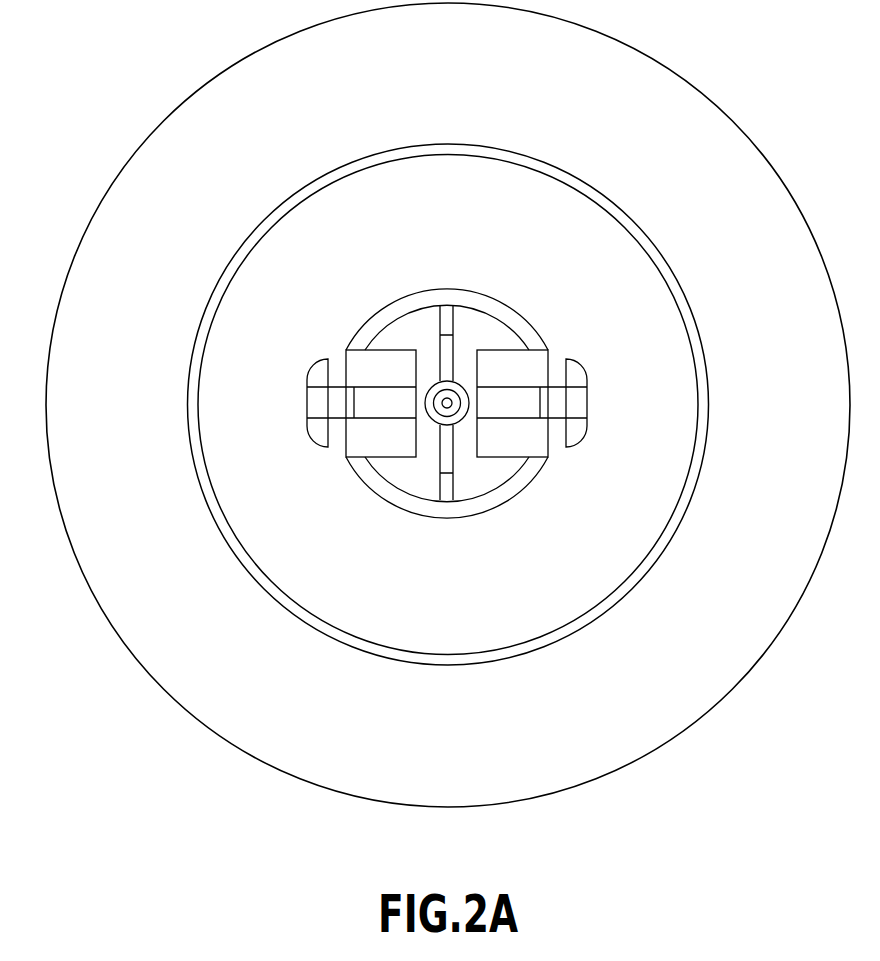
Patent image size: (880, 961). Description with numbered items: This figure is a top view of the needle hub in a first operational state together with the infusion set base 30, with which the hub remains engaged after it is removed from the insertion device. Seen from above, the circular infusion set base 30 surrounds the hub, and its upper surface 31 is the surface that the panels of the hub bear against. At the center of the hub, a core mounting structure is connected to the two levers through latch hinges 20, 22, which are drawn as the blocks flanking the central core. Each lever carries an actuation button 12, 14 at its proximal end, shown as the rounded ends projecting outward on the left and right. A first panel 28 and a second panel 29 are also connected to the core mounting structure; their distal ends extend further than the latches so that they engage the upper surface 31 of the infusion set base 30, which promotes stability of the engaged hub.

The infusion set base 30 is at (670, 102).
The upper surface 31 is at (593, 227).
The first panel 28 is at (503, 320).
The latch hinge 20 is at (387, 403).
The latch hinge 22 is at (510, 408).
The actuation button 12 is at (305, 408).
The actuation button 14 is at (587, 398).
The second panel 29 is at (442, 505).